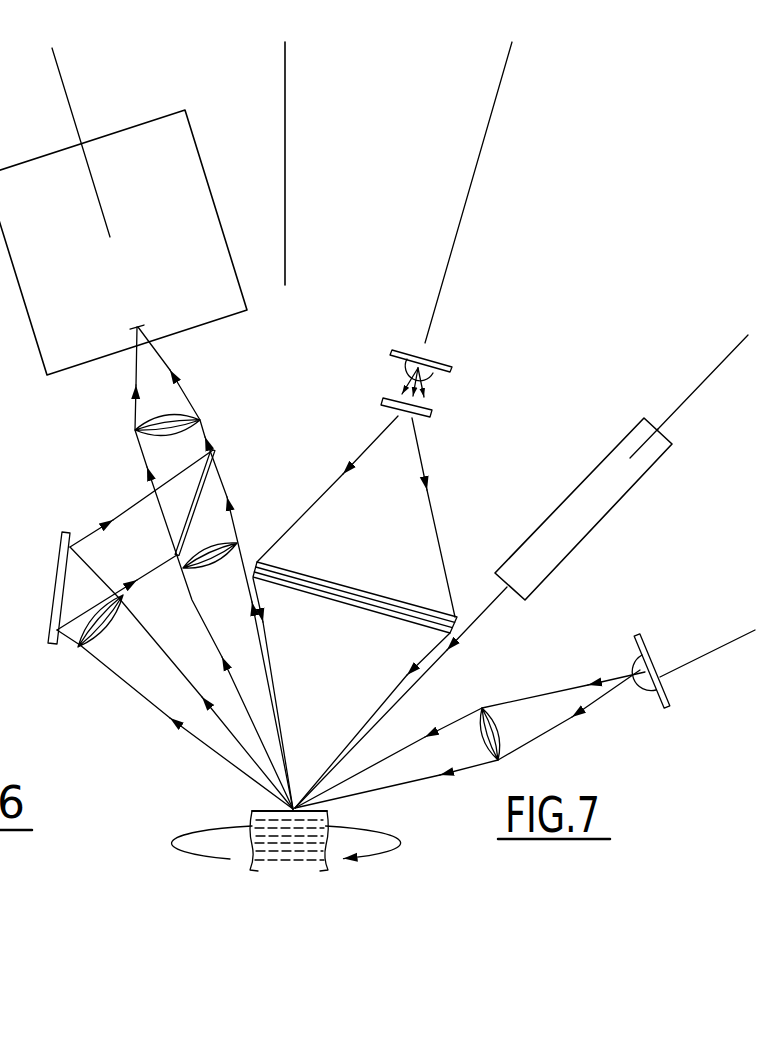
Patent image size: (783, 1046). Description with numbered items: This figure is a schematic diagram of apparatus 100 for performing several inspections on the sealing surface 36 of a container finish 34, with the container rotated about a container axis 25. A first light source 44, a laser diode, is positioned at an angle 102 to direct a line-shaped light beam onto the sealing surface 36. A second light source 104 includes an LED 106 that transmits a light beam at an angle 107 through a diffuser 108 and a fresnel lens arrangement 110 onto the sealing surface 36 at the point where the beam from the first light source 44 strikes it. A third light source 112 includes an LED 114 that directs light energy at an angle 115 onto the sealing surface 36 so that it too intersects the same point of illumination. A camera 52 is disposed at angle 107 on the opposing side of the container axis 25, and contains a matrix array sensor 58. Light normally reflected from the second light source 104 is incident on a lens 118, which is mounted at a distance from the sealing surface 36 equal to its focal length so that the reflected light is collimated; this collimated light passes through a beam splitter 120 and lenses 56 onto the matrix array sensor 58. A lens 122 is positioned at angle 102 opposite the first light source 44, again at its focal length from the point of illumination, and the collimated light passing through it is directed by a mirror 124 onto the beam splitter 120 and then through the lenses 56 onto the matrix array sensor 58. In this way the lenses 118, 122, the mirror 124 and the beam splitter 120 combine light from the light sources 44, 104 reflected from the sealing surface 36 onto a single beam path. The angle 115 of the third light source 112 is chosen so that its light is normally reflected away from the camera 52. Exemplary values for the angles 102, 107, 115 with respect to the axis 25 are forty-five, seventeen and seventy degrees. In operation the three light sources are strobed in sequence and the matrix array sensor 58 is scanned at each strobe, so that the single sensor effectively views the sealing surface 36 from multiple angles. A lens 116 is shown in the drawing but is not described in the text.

The container axis 25 is at (287, 112).
The container finish 34 is at (257, 853).
The sealing surface 36 is at (253, 815).
The first light source 44 is at (600, 462).
The camera 52 is at (201, 136).
The lenses 56 is at (135, 432).
The matrix array sensor 58 is at (140, 320).
The apparatus 100 is at (494, 357).
The angle 102 is at (727, 361).
The second light source 104 is at (441, 349).
The LED 106 is at (437, 360).
The angle 107 is at (70, 92).
The diffuser 108 is at (435, 412).
The fresnel lens arrangement 110 is at (343, 583).
The third light source 112 is at (691, 628).
The LED 114 is at (665, 690).
The angle 115 is at (715, 643).
The lens 116 is at (483, 707).
The lens 118 is at (232, 540).
The beam splitter 120 is at (212, 464).
The lens 122 is at (78, 646).
The mirror 124 is at (58, 555).